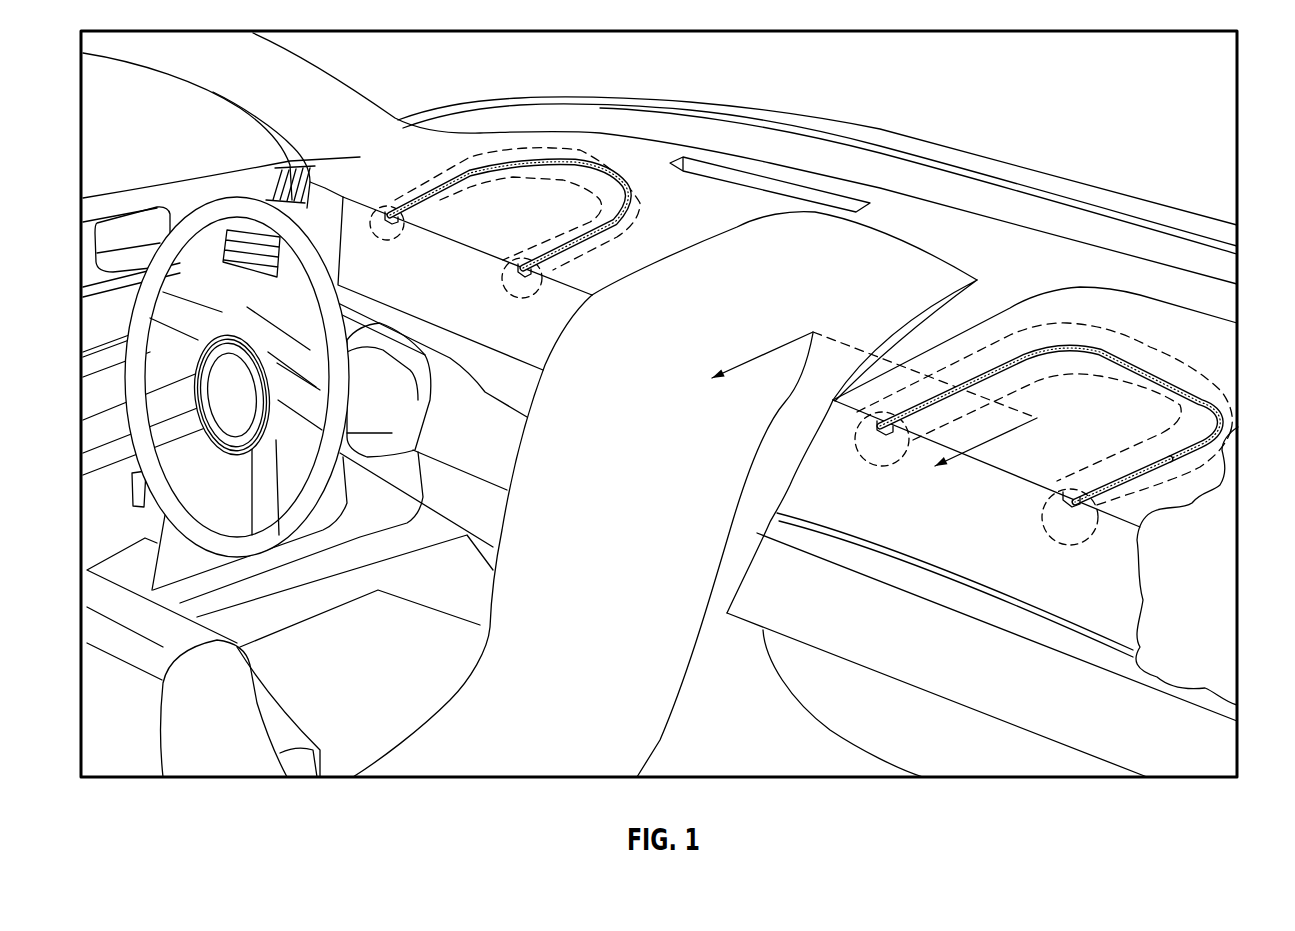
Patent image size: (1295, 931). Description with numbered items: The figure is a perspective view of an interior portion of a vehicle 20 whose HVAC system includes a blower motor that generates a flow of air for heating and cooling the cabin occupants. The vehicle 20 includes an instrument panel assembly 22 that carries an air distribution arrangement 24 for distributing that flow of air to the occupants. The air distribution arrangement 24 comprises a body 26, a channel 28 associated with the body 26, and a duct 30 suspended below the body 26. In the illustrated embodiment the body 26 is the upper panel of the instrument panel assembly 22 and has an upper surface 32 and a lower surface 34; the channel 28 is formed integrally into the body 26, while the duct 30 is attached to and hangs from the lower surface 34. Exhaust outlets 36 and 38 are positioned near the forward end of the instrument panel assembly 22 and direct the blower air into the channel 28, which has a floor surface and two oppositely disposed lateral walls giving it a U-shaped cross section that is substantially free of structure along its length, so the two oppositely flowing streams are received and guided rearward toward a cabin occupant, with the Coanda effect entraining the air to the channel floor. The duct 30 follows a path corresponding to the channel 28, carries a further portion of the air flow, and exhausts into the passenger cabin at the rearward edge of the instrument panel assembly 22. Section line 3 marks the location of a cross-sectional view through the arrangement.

The vehicle 20 is at (1110, 137).
The instrument panel assembly 22 is at (1207, 311).
The air distribution arrangement 24 is at (1093, 322).
The body 26 is at (1231, 441).
The channel 28 is at (1132, 476).
The duct 30 is at (1073, 508).
The upper surface 32 is at (1222, 484).
The lower surface 34 is at (1237, 556).
The exhaust outlet 36 is at (1143, 375).
The exhaust outlet 38 is at (1150, 382).
The section line 3- 3 is at (864, 409).